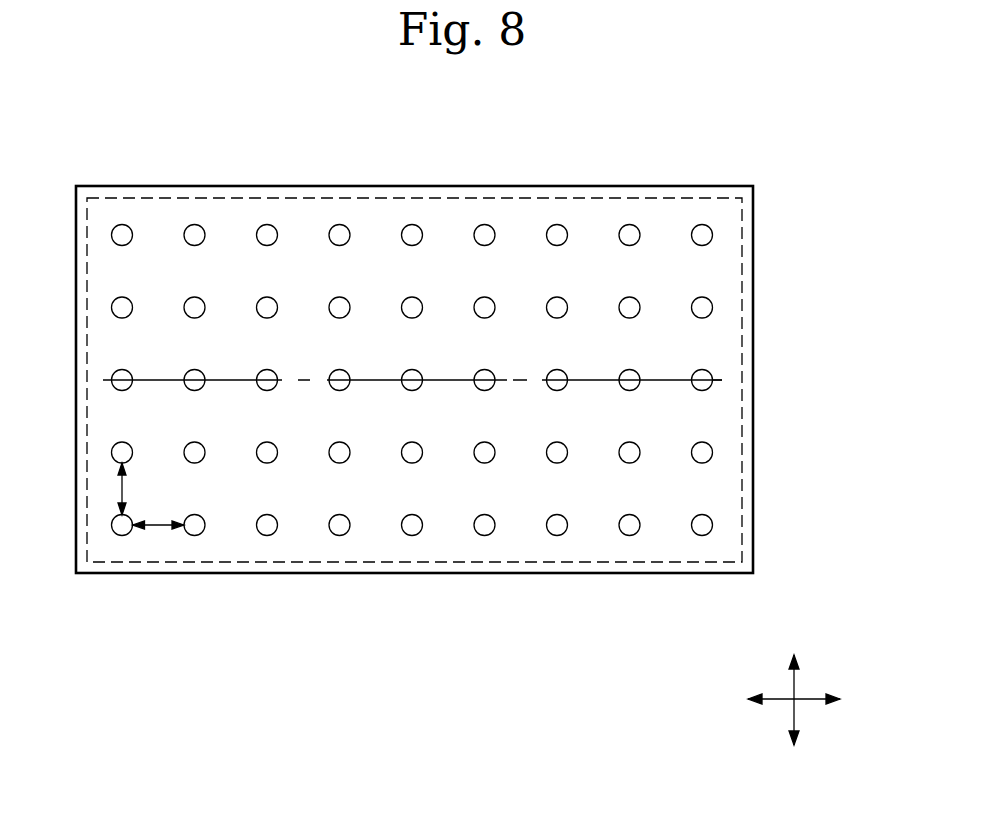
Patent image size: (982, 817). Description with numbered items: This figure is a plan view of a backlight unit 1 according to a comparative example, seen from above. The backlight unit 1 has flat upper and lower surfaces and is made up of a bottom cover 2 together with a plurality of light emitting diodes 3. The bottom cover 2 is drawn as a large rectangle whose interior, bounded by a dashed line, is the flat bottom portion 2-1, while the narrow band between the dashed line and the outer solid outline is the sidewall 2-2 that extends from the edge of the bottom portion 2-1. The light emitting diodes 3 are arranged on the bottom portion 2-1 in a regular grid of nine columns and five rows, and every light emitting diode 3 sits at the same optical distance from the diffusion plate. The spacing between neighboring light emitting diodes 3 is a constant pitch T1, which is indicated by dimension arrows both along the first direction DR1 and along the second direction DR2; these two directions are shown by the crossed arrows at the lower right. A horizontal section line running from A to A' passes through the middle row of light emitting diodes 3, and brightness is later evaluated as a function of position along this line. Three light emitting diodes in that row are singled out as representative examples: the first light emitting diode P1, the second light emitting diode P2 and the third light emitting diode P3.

The backlight unit 1 is at (414, 388).
The bottom cover 2 is at (414, 429).
The bottom portion 2-1 is at (545, 636).
The sidewall 2-2 is at (518, 568).
The light emitting diode 3 is at (261, 538).
The first light emitting diode P1 is at (336, 370).
The second light emitting diode P2 is at (409, 370).
The third light emitting diode P3 is at (482, 370).
The pitch T1 is at (151, 506).
The section line start point A is at (409, 351).
The section line end point A' is at (718, 353).
The first direction DR1 is at (817, 700).
The second direction DR2 is at (794, 689).